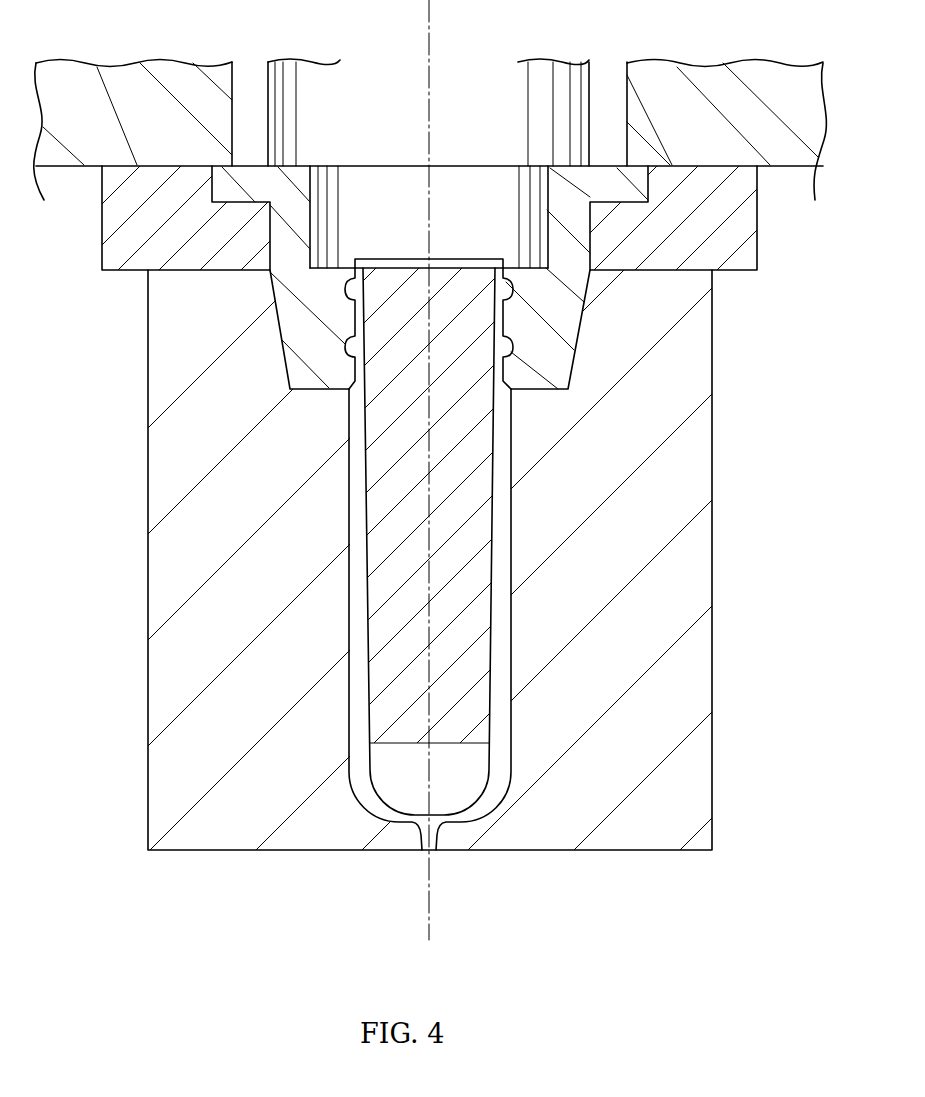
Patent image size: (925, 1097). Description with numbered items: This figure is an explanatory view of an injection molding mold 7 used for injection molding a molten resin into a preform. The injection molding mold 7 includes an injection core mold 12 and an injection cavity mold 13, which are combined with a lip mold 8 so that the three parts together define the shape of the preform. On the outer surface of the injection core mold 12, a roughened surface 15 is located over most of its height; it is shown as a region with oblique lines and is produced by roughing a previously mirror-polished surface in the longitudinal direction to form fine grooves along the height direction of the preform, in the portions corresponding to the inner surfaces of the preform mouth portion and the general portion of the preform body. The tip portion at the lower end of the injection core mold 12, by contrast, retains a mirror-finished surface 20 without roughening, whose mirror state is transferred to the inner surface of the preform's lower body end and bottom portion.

The injection molding mold 7 is at (148, 362).
The lip mold 8 is at (247, 182).
The injection core mold 12 is at (385, 666).
The injection cavity mold 13 is at (207, 568).
The roughened surface 15 is at (400, 481).
The mirror-finished surface 20 is at (400, 775).